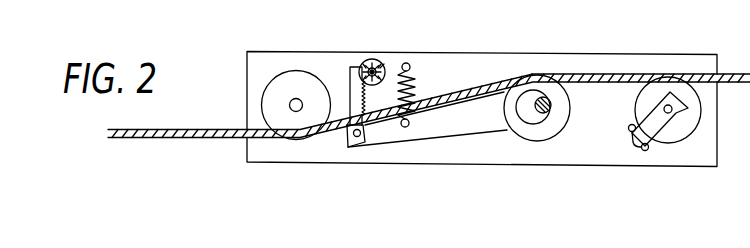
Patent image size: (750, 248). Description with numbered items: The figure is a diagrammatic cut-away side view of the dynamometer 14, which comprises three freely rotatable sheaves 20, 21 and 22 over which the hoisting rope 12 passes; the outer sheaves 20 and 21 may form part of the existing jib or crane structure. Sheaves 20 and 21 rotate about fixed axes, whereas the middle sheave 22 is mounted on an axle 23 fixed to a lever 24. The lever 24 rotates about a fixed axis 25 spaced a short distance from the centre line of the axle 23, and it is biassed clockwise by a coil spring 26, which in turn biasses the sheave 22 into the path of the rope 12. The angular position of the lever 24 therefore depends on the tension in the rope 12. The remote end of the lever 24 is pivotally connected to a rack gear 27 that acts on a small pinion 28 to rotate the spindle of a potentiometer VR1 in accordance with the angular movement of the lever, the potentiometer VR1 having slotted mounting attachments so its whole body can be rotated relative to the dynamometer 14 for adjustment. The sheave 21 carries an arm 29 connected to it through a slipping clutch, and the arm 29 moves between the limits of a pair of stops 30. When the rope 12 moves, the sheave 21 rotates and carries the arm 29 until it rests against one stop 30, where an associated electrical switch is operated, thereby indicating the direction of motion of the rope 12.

The hoisting rope 12 is at (178, 138).
The dynamometer 14 is at (252, 171).
The sheave 20 is at (262, 100).
The sheave 21 is at (665, 79).
The sheave 22 is at (523, 78).
The axle 23 is at (537, 124).
The lever 24 is at (440, 137).
The fixed axis 25 is at (549, 112).
The coil spring 26 is at (418, 82).
The rack gear 27 is at (350, 77).
The pinion 28 is at (372, 60).
The arm 29 is at (653, 120).
The stops 30 is at (631, 146).
The potentiometer VR1 is at (384, 64).